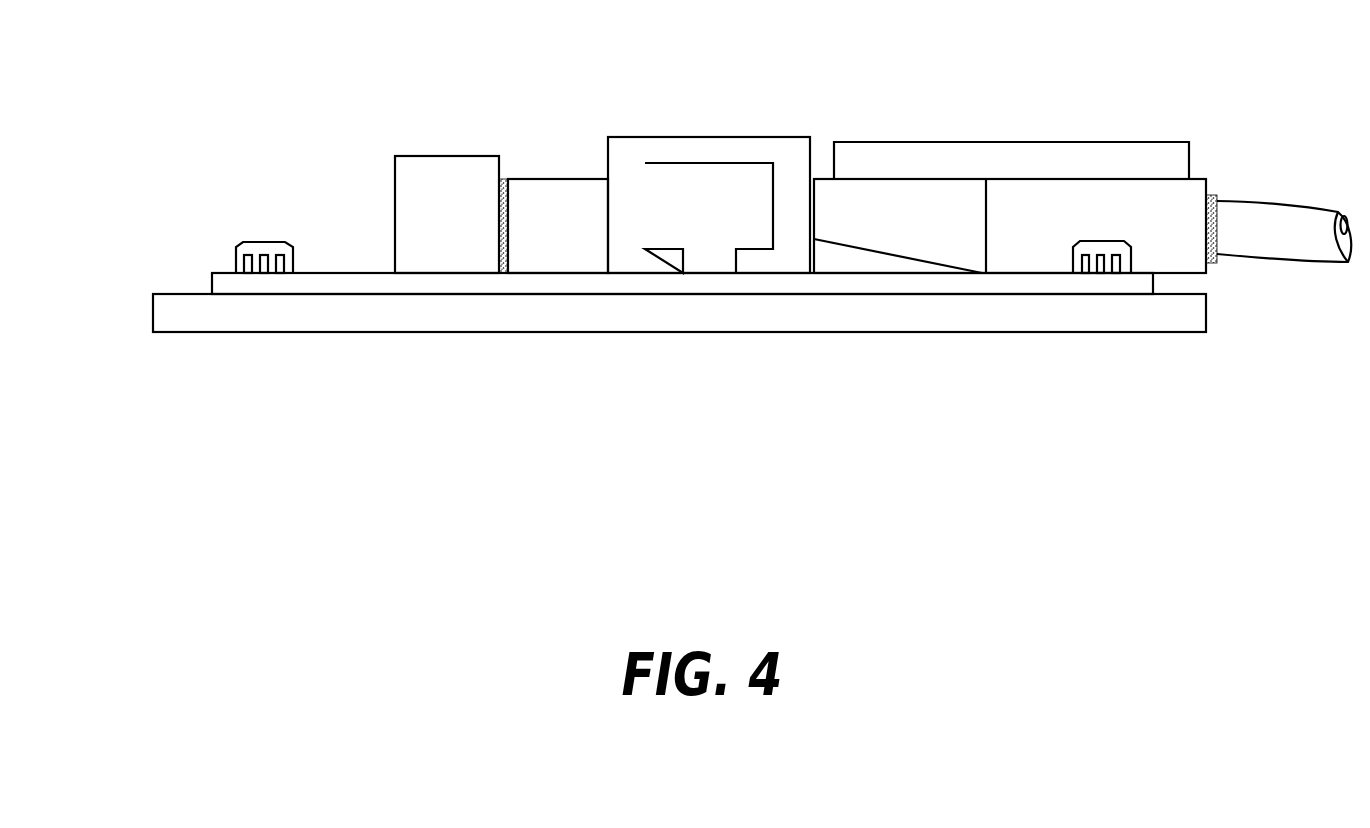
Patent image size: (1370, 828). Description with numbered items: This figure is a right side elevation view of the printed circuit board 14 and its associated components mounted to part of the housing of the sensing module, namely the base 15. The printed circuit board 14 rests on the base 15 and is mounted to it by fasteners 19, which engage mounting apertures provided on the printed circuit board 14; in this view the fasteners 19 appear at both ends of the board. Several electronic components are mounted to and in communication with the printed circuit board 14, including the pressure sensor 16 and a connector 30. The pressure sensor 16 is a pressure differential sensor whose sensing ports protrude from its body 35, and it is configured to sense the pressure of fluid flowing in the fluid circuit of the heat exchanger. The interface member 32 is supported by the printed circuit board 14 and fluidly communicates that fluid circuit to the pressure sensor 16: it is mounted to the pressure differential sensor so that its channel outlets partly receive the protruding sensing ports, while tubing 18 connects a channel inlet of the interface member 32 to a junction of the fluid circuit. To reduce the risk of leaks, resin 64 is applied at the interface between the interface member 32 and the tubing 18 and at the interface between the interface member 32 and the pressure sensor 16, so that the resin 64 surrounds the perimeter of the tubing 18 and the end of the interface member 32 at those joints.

The printed circuit board 14 is at (868, 287).
The base 15 is at (655, 320).
The pressure sensor 16 is at (432, 177).
The tubing 18 is at (1288, 210).
The fasteners 19 is at (263, 240).
The connector 30 is at (713, 143).
The interface member 32 is at (1053, 177).
The body 35 is at (469, 177).
The resin 64 is at (507, 207).